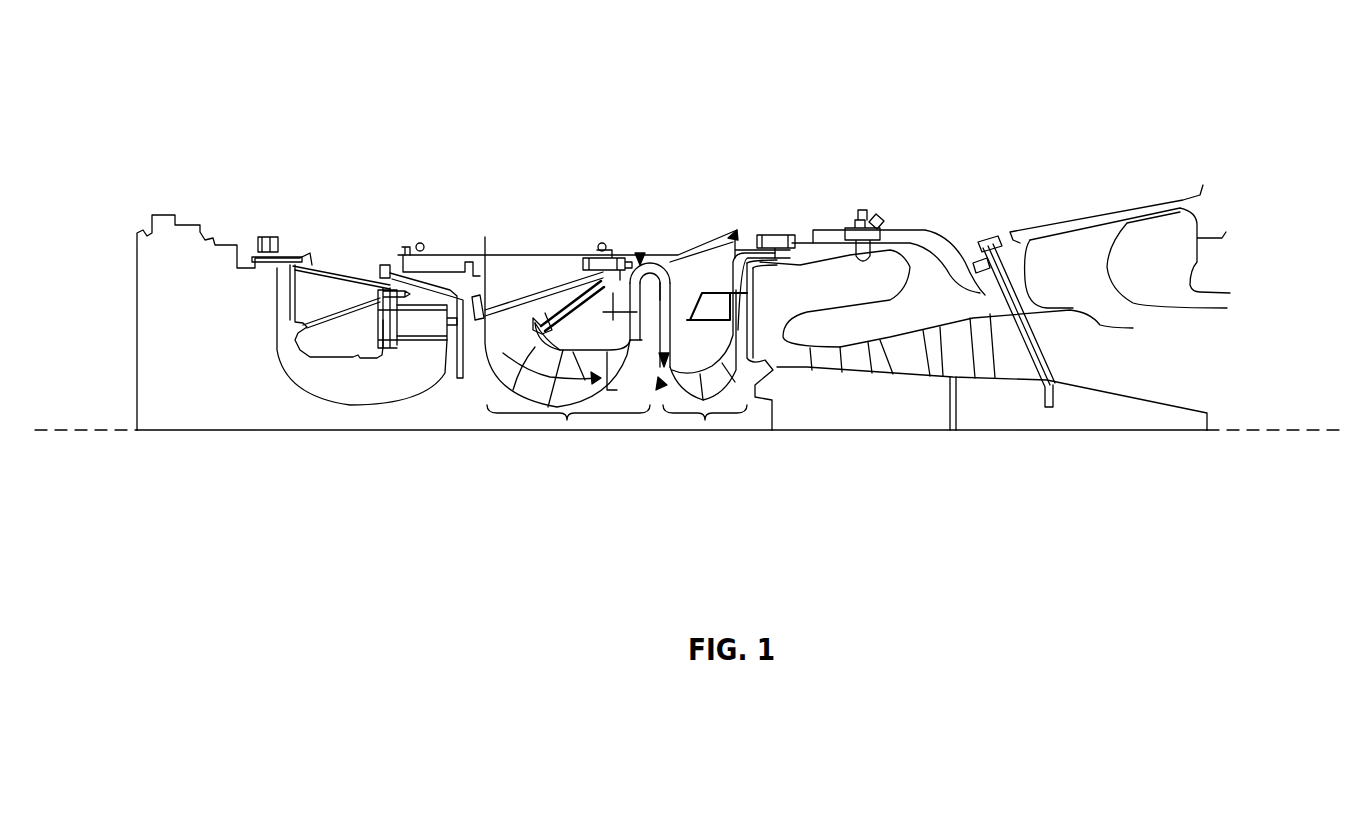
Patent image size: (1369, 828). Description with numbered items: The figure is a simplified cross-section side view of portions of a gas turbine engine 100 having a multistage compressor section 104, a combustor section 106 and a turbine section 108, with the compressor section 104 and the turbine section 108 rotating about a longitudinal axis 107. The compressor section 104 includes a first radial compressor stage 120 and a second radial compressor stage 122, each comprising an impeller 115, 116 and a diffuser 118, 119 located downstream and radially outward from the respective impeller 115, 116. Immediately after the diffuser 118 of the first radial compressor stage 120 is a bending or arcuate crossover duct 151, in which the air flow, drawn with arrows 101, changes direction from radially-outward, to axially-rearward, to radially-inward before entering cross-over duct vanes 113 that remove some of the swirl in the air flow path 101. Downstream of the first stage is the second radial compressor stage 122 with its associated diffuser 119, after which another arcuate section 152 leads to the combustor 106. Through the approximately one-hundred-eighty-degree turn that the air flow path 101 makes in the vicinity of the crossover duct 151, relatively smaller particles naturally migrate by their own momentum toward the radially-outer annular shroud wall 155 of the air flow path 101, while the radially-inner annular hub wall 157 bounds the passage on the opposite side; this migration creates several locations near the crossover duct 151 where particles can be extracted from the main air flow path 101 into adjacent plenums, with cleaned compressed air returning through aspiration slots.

The gas turbine engine 100 is at (189, 125).
The air flow path 101 is at (537, 292).
The multistage compressor section 104 is at (750, 452).
The combustor section 106 is at (900, 205).
The longitudinal axis 107 is at (1305, 427).
The turbine section 108 is at (1025, 452).
The cross-over duct vanes 113 is at (658, 392).
The impeller 115 is at (622, 363).
The impeller 116 is at (720, 355).
The diffuser 118 is at (572, 292).
The diffuser 119 is at (740, 390).
The first radial compressor stage 120 is at (567, 420).
The second radial compressor stage 122 is at (705, 420).
The crossover duct 151 is at (640, 255).
The arcuate section 152 is at (740, 236).
The radially-outer annular shroud wall 155 is at (664, 355).
The radially-inner annular hub wall 157 is at (668, 278).